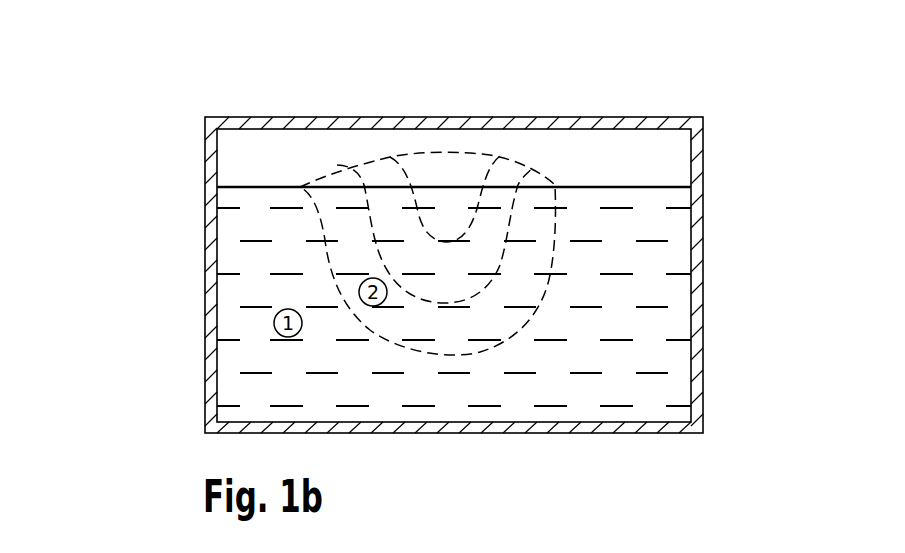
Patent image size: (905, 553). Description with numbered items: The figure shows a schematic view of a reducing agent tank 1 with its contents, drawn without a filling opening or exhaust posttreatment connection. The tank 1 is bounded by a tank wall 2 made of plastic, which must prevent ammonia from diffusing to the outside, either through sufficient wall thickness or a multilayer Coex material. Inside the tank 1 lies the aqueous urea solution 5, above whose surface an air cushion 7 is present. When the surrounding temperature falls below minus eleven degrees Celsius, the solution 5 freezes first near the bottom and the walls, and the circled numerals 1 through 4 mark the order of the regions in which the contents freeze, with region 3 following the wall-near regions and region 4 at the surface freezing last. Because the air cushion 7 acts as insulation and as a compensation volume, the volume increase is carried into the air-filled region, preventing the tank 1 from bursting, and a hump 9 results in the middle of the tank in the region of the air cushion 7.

The tank 1 is at (173, 193).
The tank wall 2 is at (695, 270).
The third freezing region 3 is at (433, 234).
The fourth freezing region 4 is at (445, 199).
The aqueous urea solution 5 is at (633, 373).
The air cushion 7 is at (673, 155).
The hump 9 is at (455, 152).